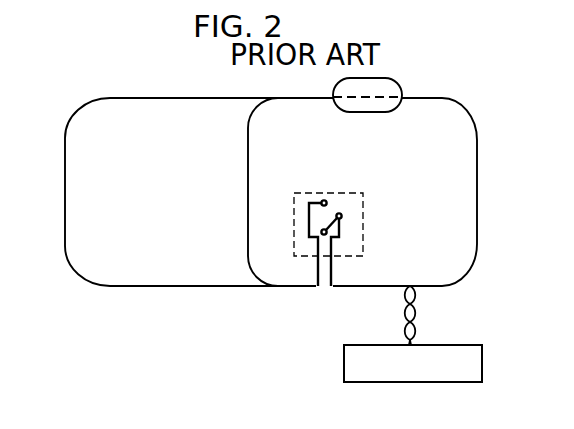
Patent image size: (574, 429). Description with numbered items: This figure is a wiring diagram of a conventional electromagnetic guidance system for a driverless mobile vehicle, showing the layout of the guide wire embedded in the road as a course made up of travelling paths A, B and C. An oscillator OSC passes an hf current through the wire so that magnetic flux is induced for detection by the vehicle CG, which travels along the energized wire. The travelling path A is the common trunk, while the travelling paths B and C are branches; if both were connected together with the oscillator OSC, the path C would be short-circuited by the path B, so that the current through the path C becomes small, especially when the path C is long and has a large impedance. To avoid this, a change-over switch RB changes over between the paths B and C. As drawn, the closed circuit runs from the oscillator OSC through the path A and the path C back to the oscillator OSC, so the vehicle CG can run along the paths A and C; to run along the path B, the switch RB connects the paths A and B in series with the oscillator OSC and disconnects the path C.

The travelling path A is at (466, 103).
The travelling path B is at (249, 148).
The travelling path C is at (157, 98).
The vehicle CG is at (368, 112).
The change-over switch RB is at (363, 226).
The oscillator OSC is at (383, 345).